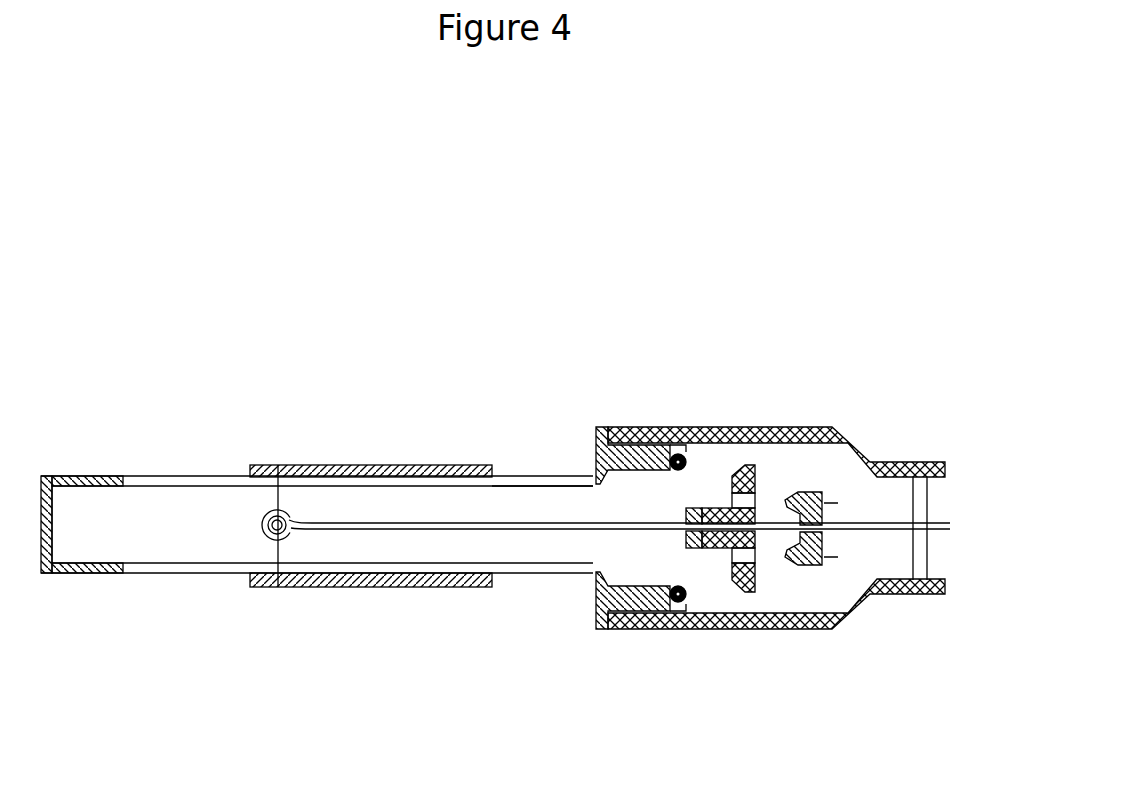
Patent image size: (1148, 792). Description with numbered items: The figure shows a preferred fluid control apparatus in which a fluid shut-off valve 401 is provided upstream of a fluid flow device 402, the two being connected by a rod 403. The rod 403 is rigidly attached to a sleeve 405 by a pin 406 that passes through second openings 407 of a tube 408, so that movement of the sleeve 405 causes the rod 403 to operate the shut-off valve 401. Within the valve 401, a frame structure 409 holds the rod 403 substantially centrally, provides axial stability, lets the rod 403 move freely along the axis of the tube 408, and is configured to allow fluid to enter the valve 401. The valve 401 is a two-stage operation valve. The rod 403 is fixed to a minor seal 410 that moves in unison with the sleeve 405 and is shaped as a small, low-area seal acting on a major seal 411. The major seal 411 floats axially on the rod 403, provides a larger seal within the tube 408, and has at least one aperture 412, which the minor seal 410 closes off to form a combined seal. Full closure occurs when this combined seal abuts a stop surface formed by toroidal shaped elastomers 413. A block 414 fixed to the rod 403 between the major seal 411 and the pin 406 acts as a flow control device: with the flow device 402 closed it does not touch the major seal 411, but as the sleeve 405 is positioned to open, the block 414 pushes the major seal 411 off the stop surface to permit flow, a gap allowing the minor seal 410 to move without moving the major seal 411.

The fluid shut-off valve 401 is at (683, 400).
The fluid flow device 402 is at (167, 432).
The rod 403 is at (452, 520).
The sleeve 405 is at (280, 590).
The pin 406 is at (262, 548).
The second openings 407 is at (162, 580).
The tube 408 is at (510, 578).
The frame structure 409 is at (917, 495).
The minor seal 410 is at (815, 570).
The major seal 411 is at (748, 590).
The aperture 412 is at (725, 558).
The toroidal shaped elastomers ('O' rings) 413 is at (643, 628).
The block 414 is at (683, 520).